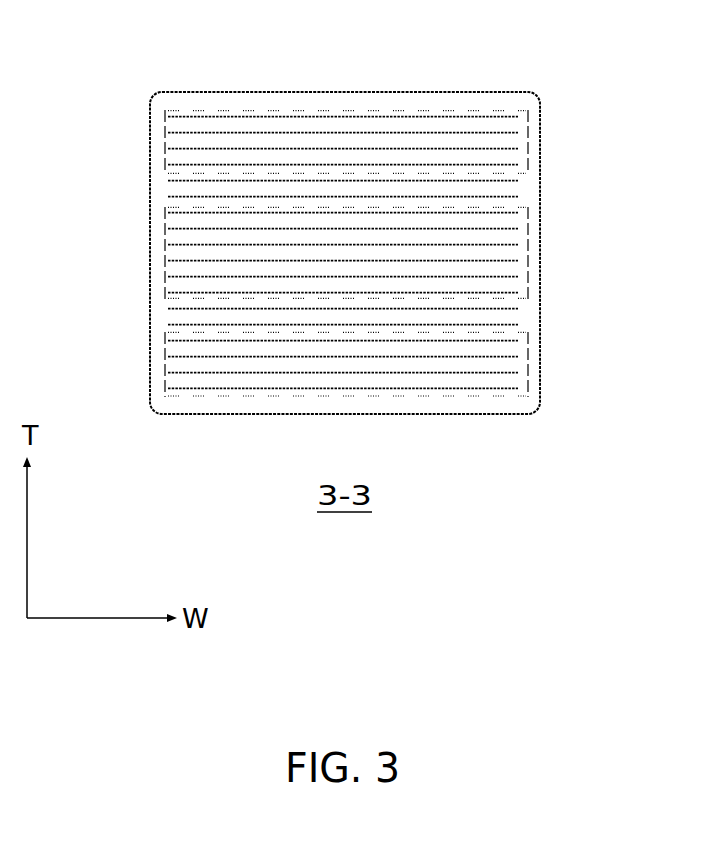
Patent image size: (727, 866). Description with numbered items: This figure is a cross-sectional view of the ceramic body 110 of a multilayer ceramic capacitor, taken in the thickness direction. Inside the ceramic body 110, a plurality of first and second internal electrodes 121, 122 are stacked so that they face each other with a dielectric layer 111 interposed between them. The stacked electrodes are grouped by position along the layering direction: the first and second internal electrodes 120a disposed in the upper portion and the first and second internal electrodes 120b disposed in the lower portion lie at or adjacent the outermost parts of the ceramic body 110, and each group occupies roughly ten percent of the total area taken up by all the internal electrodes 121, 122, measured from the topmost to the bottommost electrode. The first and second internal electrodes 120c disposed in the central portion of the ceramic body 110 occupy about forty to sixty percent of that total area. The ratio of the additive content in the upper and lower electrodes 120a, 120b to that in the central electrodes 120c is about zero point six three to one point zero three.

The ceramic body 110 is at (359, 91).
The dielectric layer 111 is at (480, 312).
The first and second internal electrodes disposed in upper portion 120a is at (528, 111).
The first and second internal electrodes disposed in lower portion 120b is at (528, 357).
The first and second internal electrodes disposed in central portion 120c is at (528, 212).
The first internal electrode 121 is at (186, 149).
The second internal electrode 122 is at (505, 388).